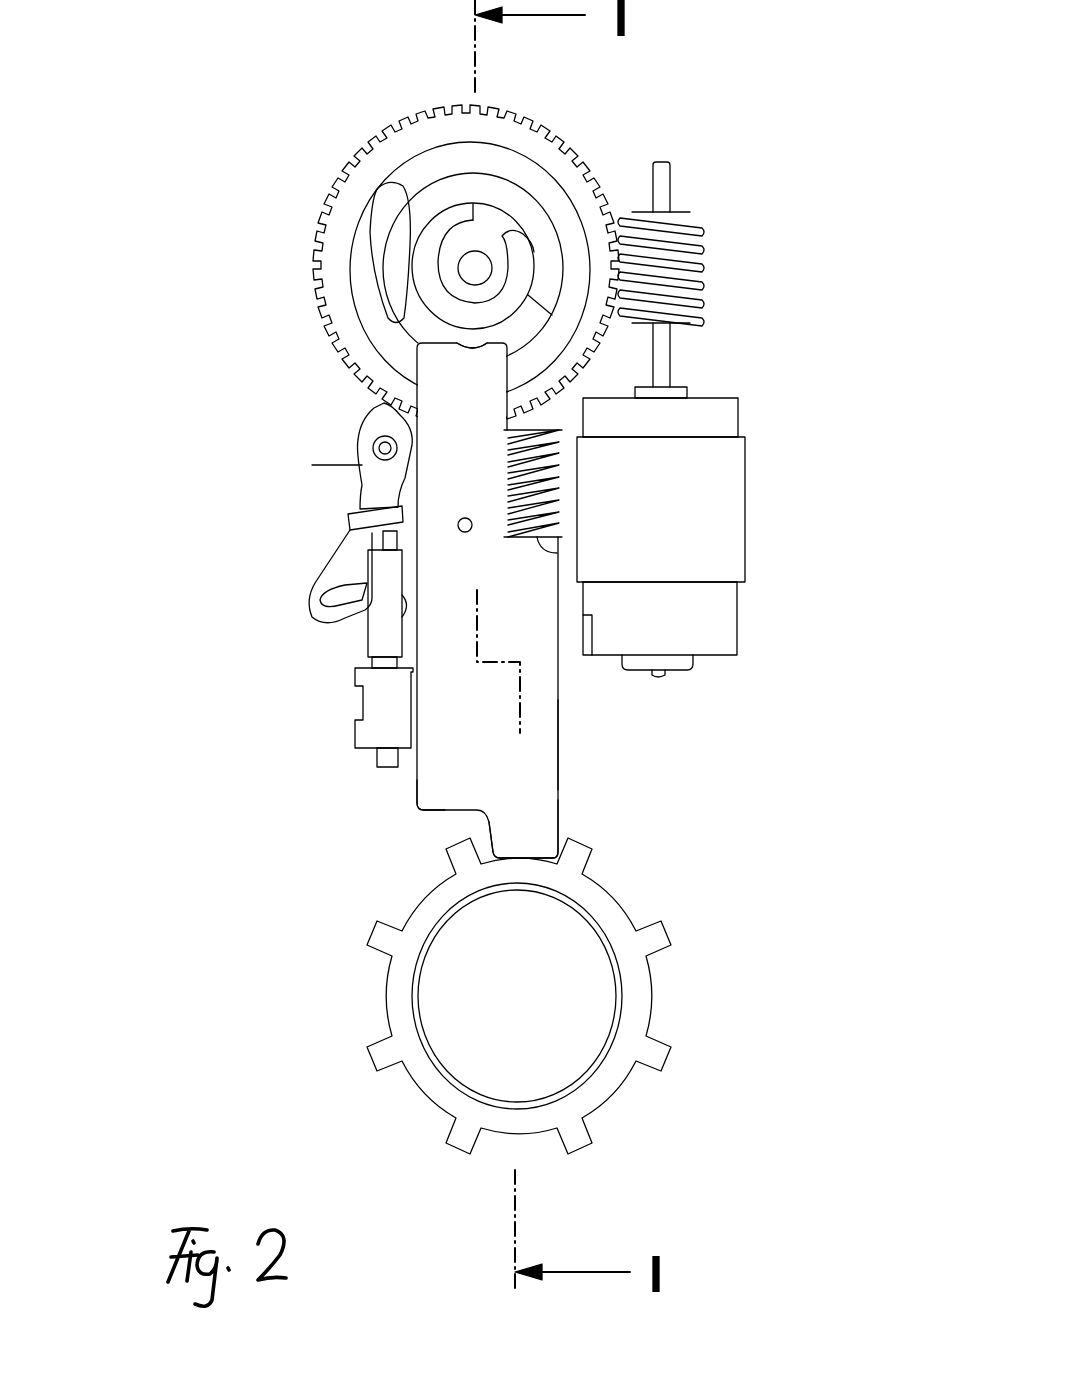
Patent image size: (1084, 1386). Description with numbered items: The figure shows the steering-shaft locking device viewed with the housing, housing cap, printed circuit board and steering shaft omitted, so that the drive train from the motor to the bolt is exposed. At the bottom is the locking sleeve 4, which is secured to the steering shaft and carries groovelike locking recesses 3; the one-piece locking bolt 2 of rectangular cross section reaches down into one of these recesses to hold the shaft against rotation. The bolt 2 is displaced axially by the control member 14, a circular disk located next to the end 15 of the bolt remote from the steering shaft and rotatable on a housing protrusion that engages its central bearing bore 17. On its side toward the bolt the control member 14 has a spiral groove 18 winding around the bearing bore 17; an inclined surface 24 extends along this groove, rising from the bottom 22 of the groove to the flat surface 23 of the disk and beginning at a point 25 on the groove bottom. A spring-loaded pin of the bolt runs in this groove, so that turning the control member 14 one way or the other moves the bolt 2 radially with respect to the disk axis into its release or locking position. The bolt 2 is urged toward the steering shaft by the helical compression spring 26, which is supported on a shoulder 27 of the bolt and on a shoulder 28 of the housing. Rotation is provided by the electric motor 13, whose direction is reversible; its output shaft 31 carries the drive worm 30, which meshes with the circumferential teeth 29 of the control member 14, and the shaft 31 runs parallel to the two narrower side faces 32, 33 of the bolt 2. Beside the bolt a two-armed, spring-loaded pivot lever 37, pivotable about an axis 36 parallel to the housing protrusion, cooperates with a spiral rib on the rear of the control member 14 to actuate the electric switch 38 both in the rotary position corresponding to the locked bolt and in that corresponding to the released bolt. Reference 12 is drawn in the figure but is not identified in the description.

The locking bolt 2 is at (543, 700).
The locking recesses 3 is at (613, 892).
The locking sleeve 4 is at (393, 993).
The arm end 12 is at (525, 843).
The electric motor 13 is at (723, 500).
The control member 14 is at (313, 190).
The end of the locking bolt 15 is at (448, 357).
The bearing bore 17 is at (472, 268).
The spiral groove 18 is at (445, 175).
The bottom of the spiral groove 22 is at (508, 190).
The flat surface 23 is at (400, 162).
The inclined surface 24 is at (535, 237).
The point 25 is at (475, 200).
The helical compression spring 26 is at (560, 470).
The shoulder of the locking bolt 27 is at (560, 548).
The shoulder of the housing 28 is at (507, 430).
The circumferential teeth 29 is at (625, 202).
The drive worm 30 is at (678, 247).
The output shaft 31 is at (660, 353).
The narrower side face 32 is at (413, 785).
The narrower side face 33 is at (562, 737).
The axis 36 is at (377, 448).
The pivot lever 37 is at (370, 492).
The electric switch 38 is at (380, 700).